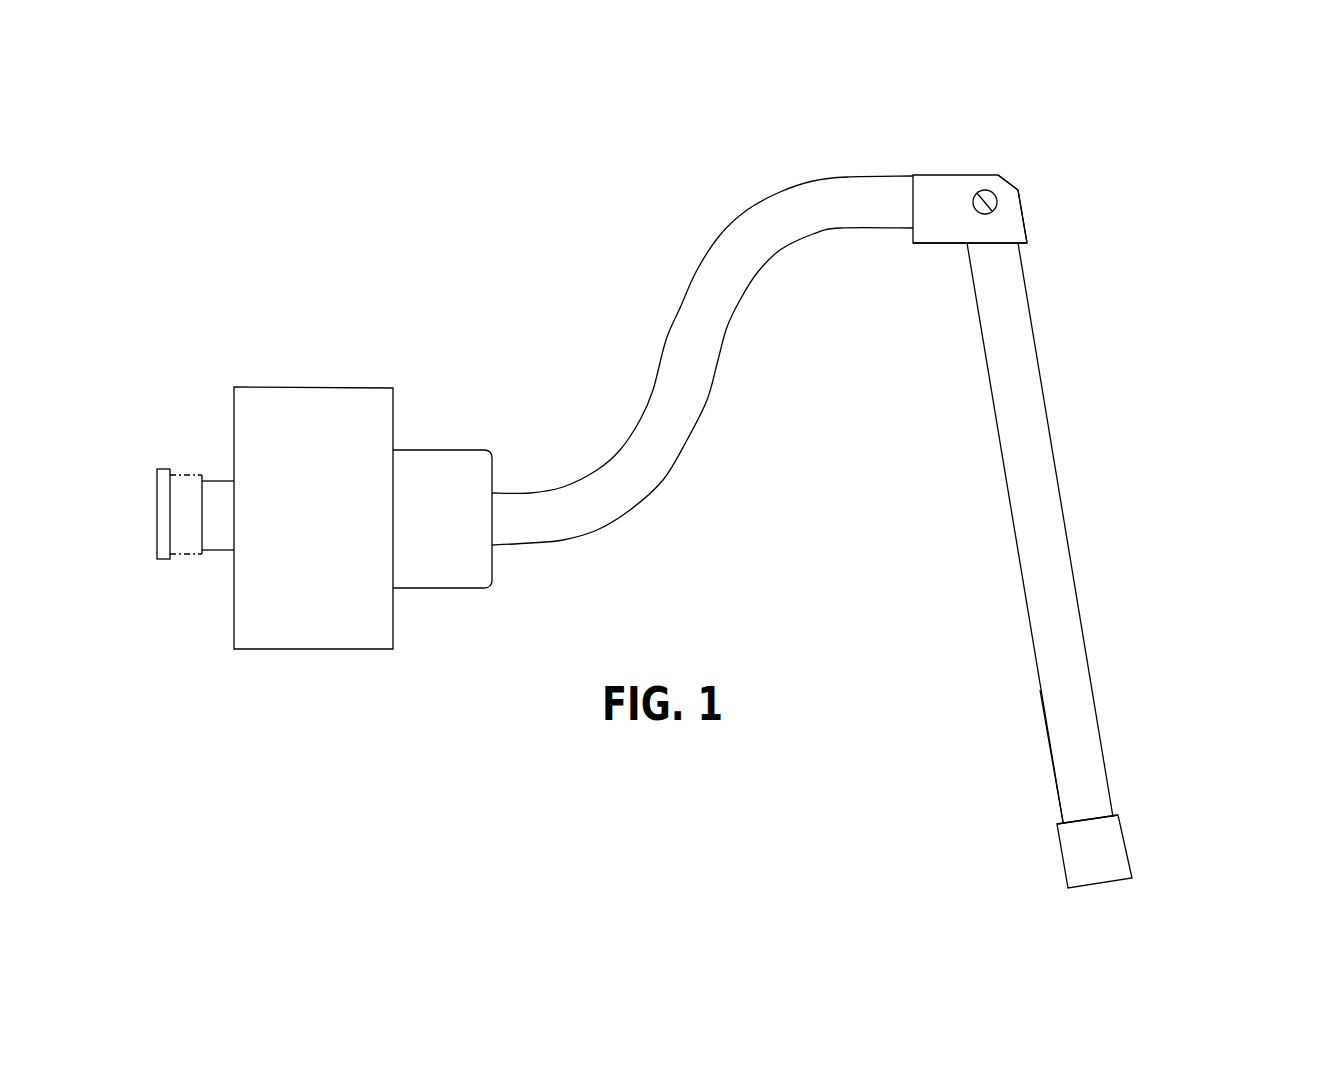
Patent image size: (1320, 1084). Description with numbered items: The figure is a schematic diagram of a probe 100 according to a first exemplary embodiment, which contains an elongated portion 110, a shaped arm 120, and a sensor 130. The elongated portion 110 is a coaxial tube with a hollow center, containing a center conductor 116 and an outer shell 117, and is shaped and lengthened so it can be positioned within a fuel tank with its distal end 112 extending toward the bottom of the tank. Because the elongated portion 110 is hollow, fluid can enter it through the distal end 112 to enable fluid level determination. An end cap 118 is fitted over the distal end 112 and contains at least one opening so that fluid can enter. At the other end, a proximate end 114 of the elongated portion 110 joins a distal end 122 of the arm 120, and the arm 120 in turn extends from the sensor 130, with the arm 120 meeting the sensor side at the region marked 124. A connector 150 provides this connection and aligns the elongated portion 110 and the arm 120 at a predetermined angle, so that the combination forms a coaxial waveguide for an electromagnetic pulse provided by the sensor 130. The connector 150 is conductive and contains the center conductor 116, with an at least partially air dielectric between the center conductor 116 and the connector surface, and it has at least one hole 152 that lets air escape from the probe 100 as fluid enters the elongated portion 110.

The probe 100 is at (691, 160).
The elongated portion 110 is at (1062, 437).
The distal end 112 is at (1135, 846).
The proximate end 114 is at (1033, 256).
The center conductor 116 is at (1010, 194).
The outer shell 117 is at (1043, 780).
The end cap 118 is at (1075, 846).
The shaped arm 120 is at (662, 341).
The distal end 122 is at (917, 160).
The tube base connector 124 is at (496, 486).
The sensor 130 is at (347, 382).
The connector 150 is at (1020, 167).
The hole 152 is at (965, 222).